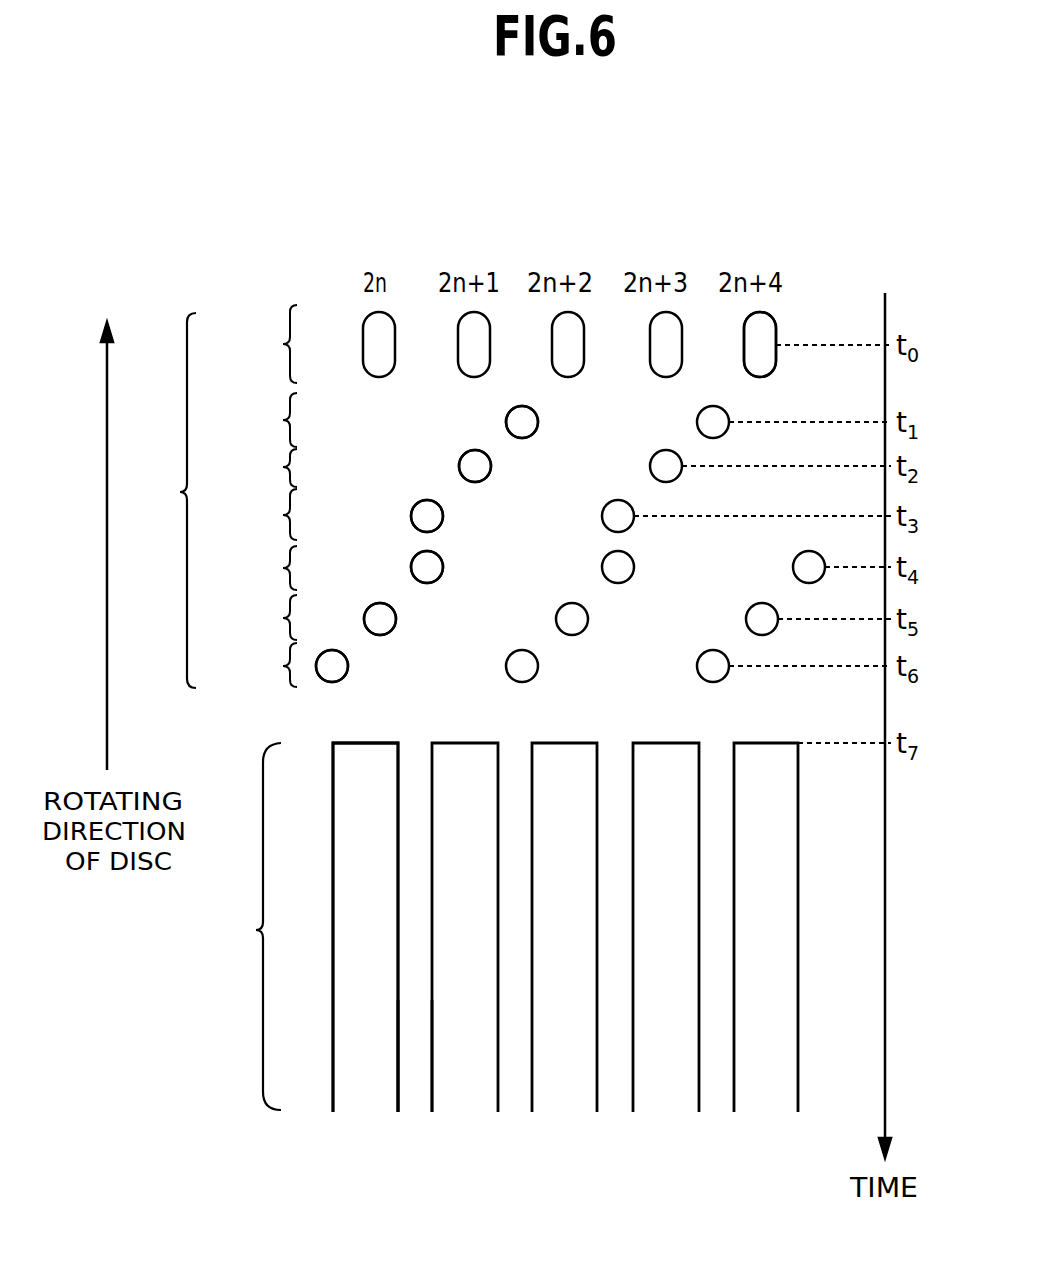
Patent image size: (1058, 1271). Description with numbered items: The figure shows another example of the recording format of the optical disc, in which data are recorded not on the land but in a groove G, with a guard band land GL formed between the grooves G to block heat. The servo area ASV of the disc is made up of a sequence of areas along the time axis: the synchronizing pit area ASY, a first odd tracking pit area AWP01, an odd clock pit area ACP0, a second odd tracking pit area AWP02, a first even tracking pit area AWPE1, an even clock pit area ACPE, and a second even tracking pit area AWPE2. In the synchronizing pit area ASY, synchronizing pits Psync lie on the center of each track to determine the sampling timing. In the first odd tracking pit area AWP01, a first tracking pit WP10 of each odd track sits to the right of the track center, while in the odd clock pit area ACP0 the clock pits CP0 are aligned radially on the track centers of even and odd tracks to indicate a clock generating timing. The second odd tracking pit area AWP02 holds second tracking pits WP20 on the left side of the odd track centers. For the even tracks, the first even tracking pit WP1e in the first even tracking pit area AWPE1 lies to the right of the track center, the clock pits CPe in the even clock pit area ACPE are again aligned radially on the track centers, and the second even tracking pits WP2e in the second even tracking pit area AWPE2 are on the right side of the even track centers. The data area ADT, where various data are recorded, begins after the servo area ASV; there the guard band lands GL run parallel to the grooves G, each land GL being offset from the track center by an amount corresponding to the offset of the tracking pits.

The servo area ASV is at (155, 500).
The synchronizing pit area ASY is at (491, 344).
The first odd tracking pit area AWP01 is at (459, 420).
The odd clock pit area ACP0 is at (436, 468).
The second odd tracking pit area AWP02 is at (412, 514).
The first even tracking pit area AWPE1 is at (507, 568).
The even clock pit area ACPE is at (484, 617).
The second even tracking pit area AWPE2 is at (459, 665).
The synchronizing pit Psync is at (776, 328).
The first tracking pit WP10 is at (538, 418).
The clock pit CP0 is at (491, 466).
The second tracking pit WP20 is at (443, 516).
The first even tracking pit WP1e is at (443, 566).
The clock pit CPe is at (396, 620).
The second even tracking pit WP2e is at (348, 666).
The data area ADT is at (494, 927).
The groove G is at (346, 963).
The guard band land GL is at (415, 1103).